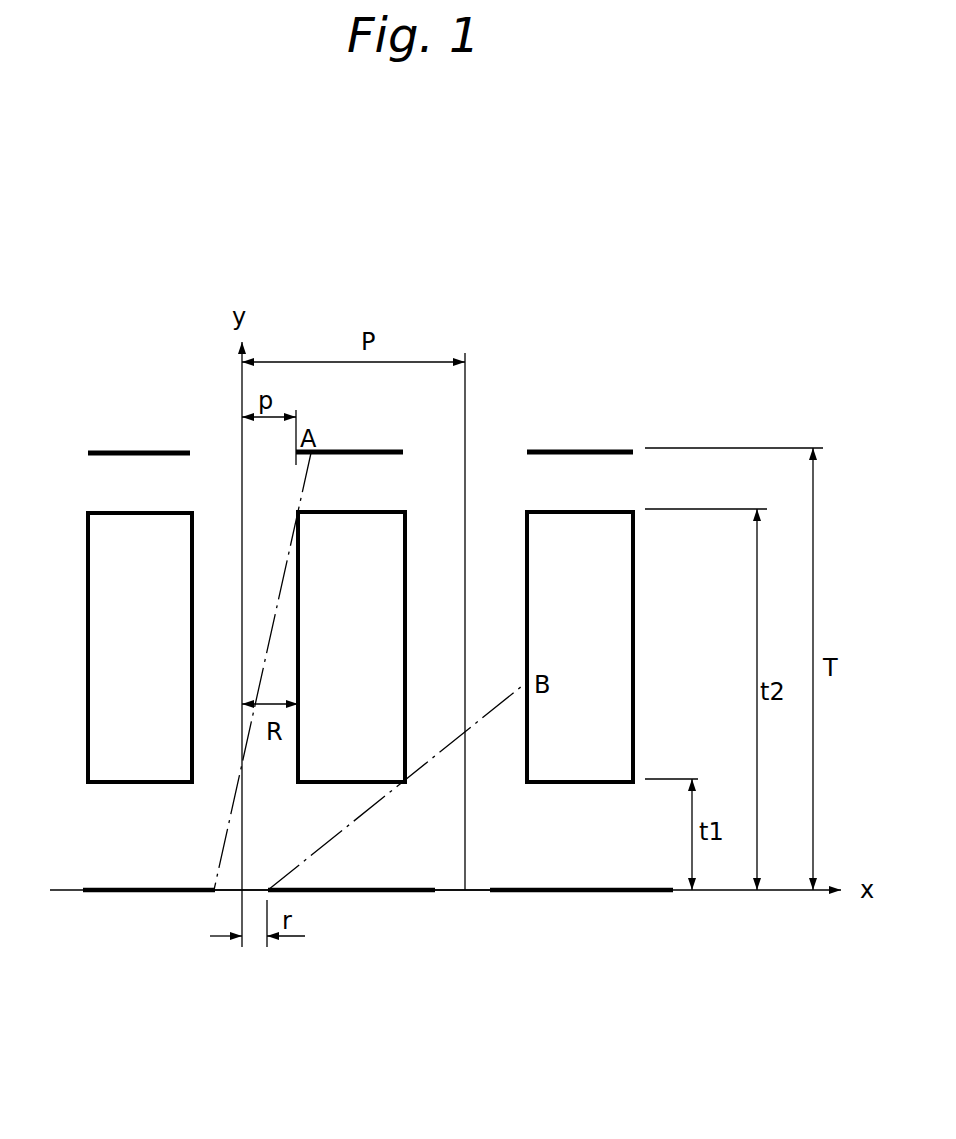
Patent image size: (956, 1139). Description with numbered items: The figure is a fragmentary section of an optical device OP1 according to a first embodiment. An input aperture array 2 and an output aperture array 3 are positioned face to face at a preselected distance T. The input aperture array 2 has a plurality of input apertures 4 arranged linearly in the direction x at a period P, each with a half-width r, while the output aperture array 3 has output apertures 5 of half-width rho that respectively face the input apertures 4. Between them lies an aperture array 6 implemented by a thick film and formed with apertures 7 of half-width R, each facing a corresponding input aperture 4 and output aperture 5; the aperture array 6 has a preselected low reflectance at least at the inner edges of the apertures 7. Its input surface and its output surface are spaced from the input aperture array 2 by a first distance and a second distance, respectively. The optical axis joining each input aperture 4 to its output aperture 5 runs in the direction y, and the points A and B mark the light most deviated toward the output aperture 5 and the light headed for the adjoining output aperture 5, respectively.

The input aperture array 2 is at (103, 895).
The output aperture array 3 is at (113, 451).
The input apertures 4 is at (235, 895).
The output apertures 5 is at (221, 441).
The aperture array 6 is at (104, 541).
The apertures 7 is at (218, 615).
The optical device OP1 is at (152, 386).